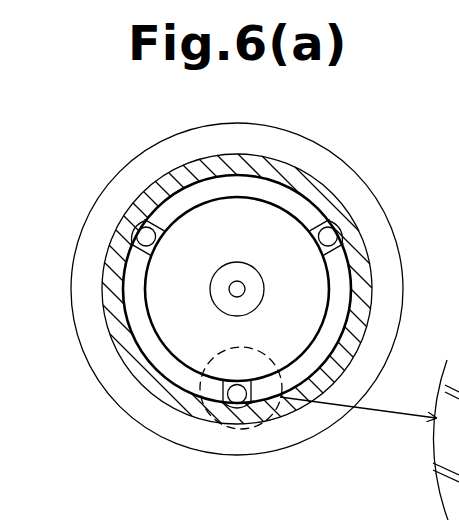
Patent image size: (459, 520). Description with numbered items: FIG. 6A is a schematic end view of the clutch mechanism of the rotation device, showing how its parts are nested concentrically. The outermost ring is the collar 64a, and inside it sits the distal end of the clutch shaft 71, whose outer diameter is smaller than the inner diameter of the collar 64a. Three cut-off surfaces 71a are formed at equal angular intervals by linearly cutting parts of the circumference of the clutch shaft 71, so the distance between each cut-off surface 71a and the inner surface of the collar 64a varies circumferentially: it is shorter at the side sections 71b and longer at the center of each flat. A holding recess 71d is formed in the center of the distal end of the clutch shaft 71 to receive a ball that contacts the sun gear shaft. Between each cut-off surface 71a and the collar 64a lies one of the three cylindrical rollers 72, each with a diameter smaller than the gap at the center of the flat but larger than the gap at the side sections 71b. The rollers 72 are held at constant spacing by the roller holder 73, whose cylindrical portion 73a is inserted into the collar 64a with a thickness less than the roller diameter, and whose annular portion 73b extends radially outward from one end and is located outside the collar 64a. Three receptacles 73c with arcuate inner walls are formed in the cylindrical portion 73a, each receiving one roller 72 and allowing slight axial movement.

The roller holder 73 is at (327, 143).
The cylindrical portion 73a is at (360, 401).
The annular portion 73b is at (368, 190).
The receptacles 73c is at (160, 237).
The collar 64a is at (305, 172).
The clutch shaft 71 is at (322, 290).
The cut-off surfaces 71a is at (125, 243).
The side sections 71b is at (458, 360).
The holding recess 71d is at (229, 296).
The rollers 72 is at (138, 232).